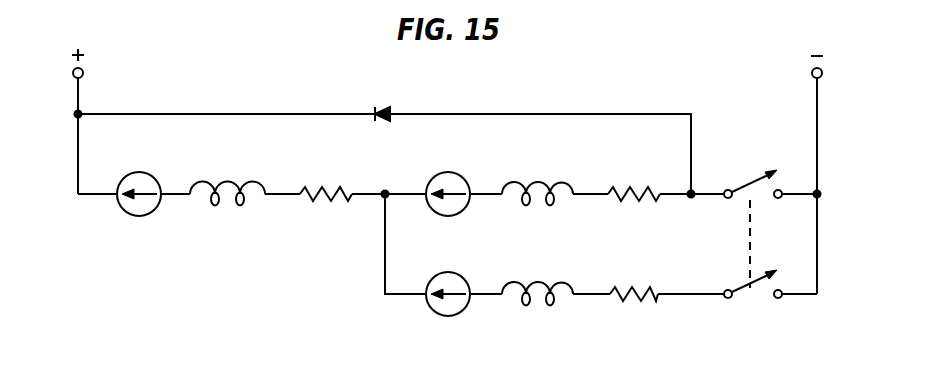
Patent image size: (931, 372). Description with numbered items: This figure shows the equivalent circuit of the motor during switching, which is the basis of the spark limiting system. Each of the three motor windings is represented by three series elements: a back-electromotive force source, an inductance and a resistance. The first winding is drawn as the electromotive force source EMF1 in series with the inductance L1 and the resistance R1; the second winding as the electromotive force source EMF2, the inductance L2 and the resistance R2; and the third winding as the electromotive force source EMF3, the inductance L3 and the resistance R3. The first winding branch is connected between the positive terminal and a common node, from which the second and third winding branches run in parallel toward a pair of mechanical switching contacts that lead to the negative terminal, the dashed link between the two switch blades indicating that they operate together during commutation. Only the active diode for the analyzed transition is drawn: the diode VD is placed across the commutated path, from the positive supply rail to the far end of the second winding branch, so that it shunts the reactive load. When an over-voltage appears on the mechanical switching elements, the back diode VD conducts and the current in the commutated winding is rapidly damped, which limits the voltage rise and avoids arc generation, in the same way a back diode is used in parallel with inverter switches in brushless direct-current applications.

The diode VD is at (381, 101).
The first electromotive force source EMF1 is at (142, 180).
The first inductance L1 is at (227, 180).
The first resistance R1 is at (326, 178).
The second electromotive force source EMF2 is at (451, 180).
The second inductance L2 is at (537, 180).
The second resistance R2 is at (634, 180).
The third electromotive force source EMF3 is at (451, 280).
The third inductance L3 is at (537, 280).
The third resistance R3 is at (634, 278).